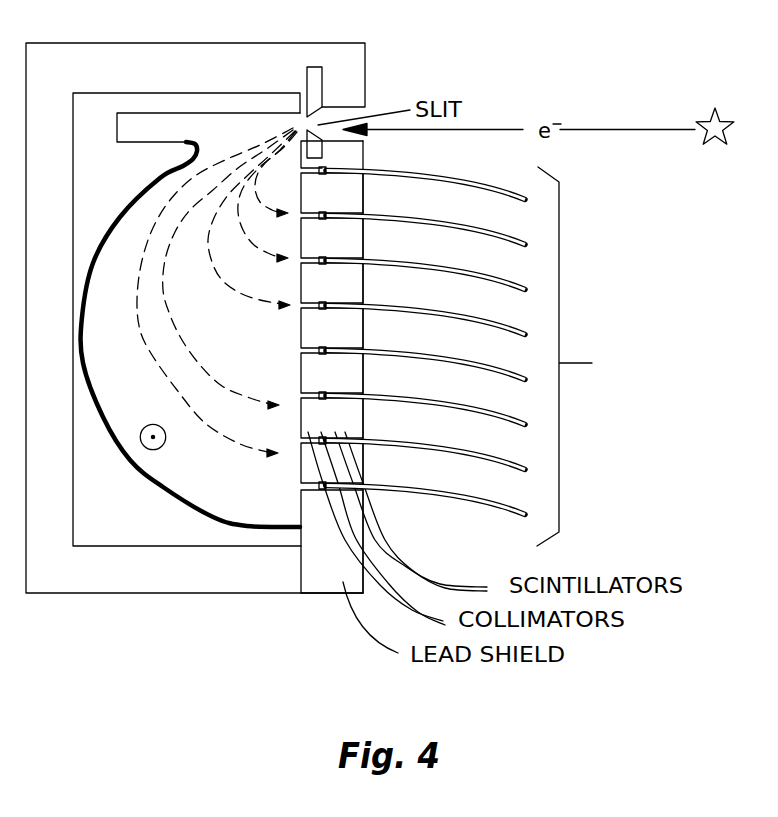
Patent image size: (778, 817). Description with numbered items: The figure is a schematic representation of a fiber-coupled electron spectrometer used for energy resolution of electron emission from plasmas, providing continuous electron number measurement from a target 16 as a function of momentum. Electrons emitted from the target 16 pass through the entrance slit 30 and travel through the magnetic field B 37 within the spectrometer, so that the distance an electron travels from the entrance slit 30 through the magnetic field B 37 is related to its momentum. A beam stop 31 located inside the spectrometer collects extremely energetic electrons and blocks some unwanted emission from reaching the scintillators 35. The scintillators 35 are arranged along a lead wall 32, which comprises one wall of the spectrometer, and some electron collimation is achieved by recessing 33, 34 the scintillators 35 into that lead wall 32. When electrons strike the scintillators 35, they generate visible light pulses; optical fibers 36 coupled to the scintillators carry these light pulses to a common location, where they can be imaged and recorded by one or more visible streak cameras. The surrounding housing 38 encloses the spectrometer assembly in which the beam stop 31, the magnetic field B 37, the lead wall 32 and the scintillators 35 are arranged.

The target 16 is at (728, 133).
The entrance slit 30 is at (312, 67).
The beam stop 31 is at (117, 128).
The lead wall 32 is at (328, 588).
The recess 33 is at (300, 467).
The recess 34 is at (298, 515).
The scintillators 35 is at (327, 393).
The optical fibers 36 is at (507, 517).
The magnetic field B 37 is at (152, 424).
The housing 38 is at (72, 582).